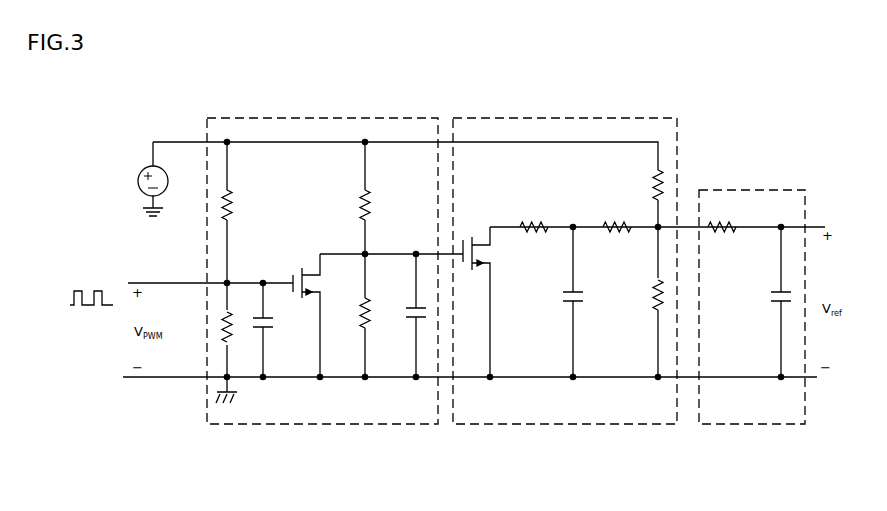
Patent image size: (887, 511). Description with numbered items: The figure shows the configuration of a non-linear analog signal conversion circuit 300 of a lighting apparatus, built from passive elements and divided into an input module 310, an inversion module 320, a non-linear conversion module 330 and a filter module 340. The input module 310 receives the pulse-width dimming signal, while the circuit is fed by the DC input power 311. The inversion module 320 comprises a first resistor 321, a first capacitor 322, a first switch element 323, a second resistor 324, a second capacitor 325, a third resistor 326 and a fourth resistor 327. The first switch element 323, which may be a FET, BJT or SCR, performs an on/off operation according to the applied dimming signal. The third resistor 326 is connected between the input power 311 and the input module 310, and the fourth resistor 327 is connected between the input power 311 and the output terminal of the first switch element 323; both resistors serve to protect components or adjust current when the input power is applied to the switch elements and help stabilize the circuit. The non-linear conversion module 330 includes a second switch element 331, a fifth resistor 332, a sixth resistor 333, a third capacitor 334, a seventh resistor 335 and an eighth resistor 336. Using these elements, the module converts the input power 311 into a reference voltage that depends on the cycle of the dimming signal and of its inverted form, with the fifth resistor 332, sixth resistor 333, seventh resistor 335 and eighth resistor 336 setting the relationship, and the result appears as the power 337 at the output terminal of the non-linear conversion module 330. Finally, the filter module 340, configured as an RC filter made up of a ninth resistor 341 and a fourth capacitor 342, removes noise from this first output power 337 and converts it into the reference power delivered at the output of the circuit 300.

The non-linear analog signal conversion circuit 300 is at (157, 115).
The input module 310 is at (92, 306).
The input power 311 is at (138, 181).
The inversion module 320 is at (335, 425).
The first resistor 321 is at (222, 325).
The first capacitor 322 is at (273, 328).
The first switch element 323 is at (318, 283).
The second resistor 324 is at (361, 318).
The second capacitor 325 is at (412, 318).
The third resistor 326 is at (234, 199).
The fourth resistor 327 is at (372, 199).
The non-linear conversion module 330 is at (548, 427).
The second switch element 331 is at (492, 263).
The fifth resistor 332 is at (530, 222).
The sixth resistor 333 is at (612, 222).
The third capacitor 334 is at (563, 300).
The seventh resistor 335 is at (655, 180).
The eighth resistor 336 is at (655, 300).
The power of the output terminal of the non-linear conversion module 337 is at (659, 226).
The filter module 340 is at (738, 427).
The ninth resistor 341 is at (722, 224).
The fourth capacitor 342 is at (770, 296).